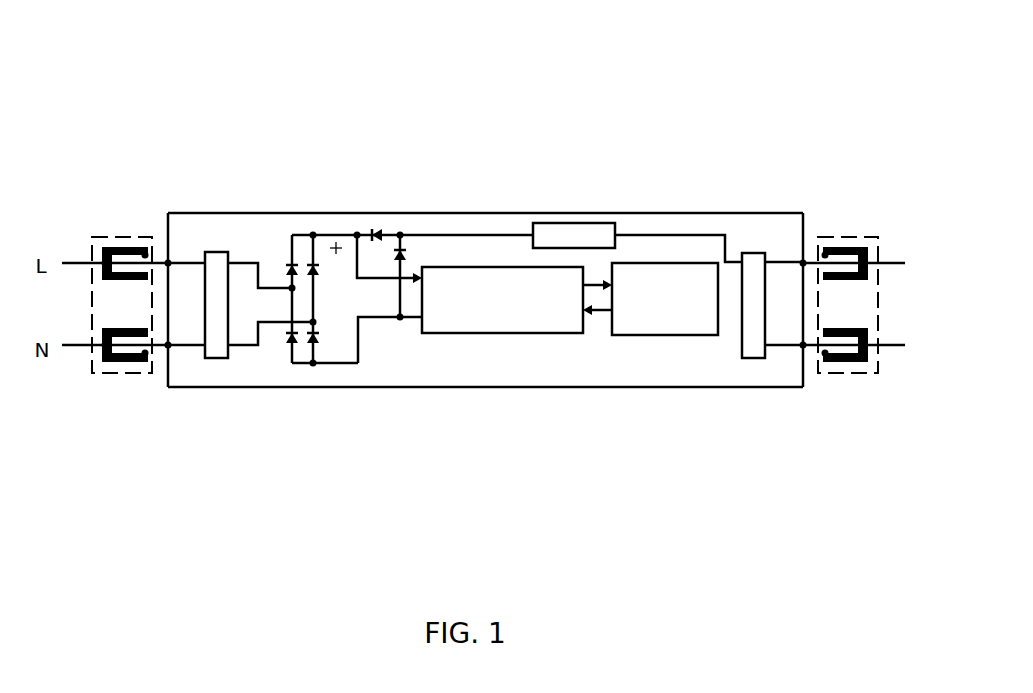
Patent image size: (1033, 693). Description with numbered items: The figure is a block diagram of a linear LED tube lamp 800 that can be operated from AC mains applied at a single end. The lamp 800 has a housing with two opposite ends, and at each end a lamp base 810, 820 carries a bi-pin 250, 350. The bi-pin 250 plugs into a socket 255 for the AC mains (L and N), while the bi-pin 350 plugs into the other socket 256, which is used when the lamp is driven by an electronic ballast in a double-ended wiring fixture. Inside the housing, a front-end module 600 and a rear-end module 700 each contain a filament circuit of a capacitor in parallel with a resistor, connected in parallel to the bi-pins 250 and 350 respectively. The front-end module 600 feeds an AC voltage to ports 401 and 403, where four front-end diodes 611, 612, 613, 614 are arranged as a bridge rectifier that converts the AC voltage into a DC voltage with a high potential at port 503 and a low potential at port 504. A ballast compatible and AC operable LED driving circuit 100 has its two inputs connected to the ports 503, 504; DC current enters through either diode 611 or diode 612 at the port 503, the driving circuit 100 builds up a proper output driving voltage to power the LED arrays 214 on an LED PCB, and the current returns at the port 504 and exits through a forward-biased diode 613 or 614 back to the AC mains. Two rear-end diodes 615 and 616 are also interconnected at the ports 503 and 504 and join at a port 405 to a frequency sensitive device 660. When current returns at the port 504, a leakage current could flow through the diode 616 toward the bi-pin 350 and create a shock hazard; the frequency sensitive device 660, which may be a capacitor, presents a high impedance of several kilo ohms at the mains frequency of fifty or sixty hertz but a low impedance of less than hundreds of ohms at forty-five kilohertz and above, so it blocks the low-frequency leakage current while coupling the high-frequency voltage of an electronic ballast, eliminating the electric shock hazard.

The ballast compatible and AC operable (BA) LED driving circuit 100 is at (560, 334).
The LED arrays 214 is at (654, 263).
The bi-pin 250 is at (130, 262).
The socket 255 is at (110, 374).
The socket 256 is at (864, 374).
The bi-pin 350 is at (853, 262).
The port 401 is at (290, 285).
The port 403 is at (316, 325).
The port 405 is at (401, 233).
The port 503 is at (358, 233).
The port 504 is at (402, 320).
The front-end module 600 is at (214, 252).
The front-end diode 611 is at (288, 264).
The front-end diode 612 is at (316, 264).
The front-end diode 613 is at (289, 344).
The front-end diode 614 is at (320, 345).
The rear-end diode 615 is at (374, 232).
The rear-end diode 616 is at (404, 249).
The frequency sensitive device 660 is at (568, 223).
The rear-end module 700 is at (753, 359).
The linear LED tube (LLT) lamp 800 is at (543, 398).
The lamp base 810 is at (174, 400).
The lamp base 820 is at (804, 400).